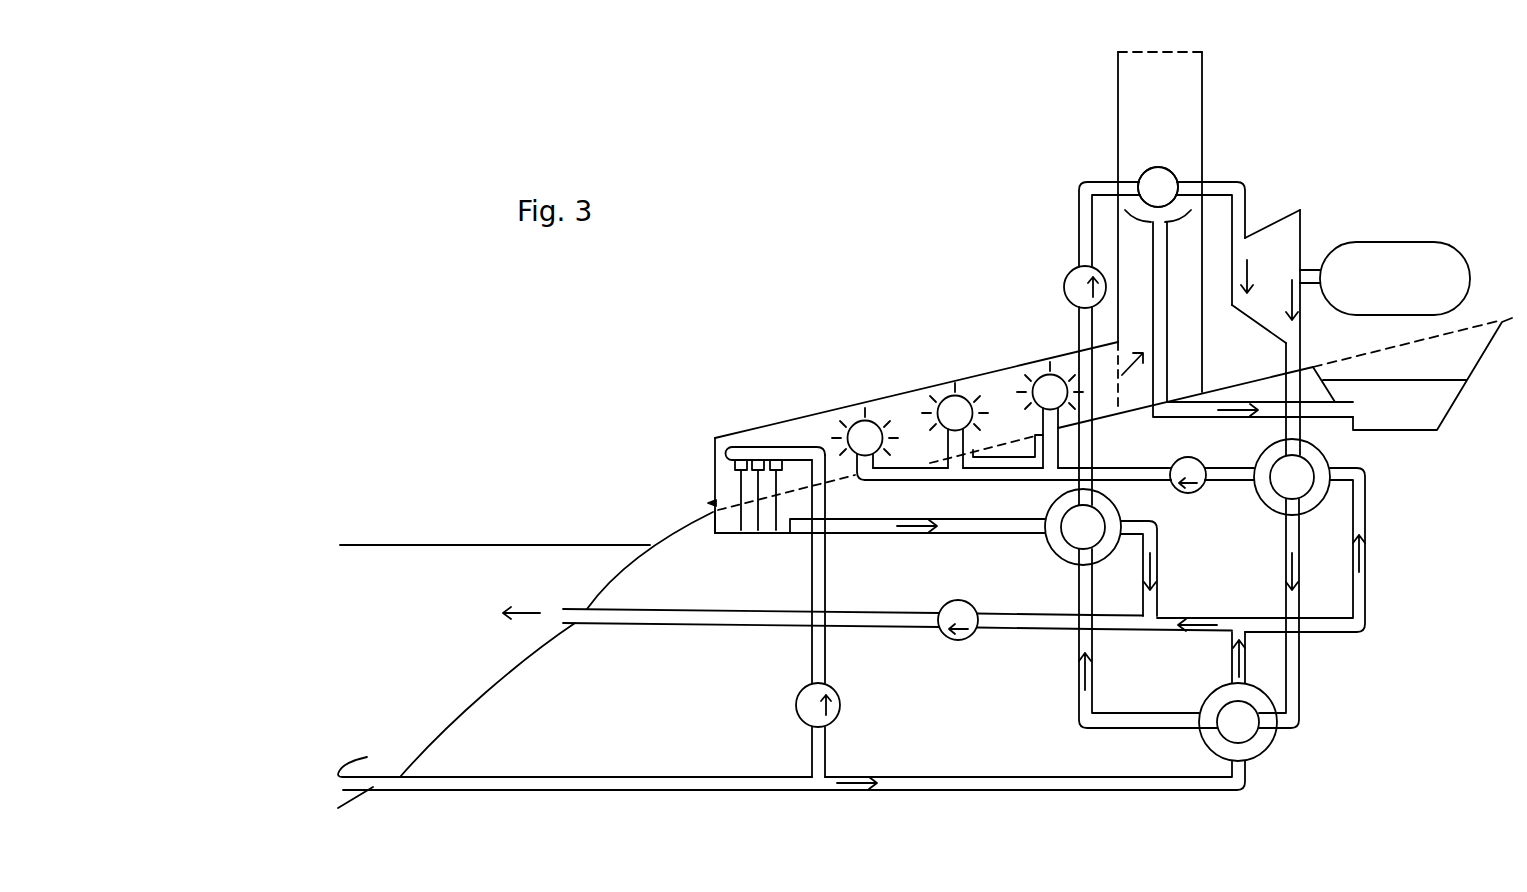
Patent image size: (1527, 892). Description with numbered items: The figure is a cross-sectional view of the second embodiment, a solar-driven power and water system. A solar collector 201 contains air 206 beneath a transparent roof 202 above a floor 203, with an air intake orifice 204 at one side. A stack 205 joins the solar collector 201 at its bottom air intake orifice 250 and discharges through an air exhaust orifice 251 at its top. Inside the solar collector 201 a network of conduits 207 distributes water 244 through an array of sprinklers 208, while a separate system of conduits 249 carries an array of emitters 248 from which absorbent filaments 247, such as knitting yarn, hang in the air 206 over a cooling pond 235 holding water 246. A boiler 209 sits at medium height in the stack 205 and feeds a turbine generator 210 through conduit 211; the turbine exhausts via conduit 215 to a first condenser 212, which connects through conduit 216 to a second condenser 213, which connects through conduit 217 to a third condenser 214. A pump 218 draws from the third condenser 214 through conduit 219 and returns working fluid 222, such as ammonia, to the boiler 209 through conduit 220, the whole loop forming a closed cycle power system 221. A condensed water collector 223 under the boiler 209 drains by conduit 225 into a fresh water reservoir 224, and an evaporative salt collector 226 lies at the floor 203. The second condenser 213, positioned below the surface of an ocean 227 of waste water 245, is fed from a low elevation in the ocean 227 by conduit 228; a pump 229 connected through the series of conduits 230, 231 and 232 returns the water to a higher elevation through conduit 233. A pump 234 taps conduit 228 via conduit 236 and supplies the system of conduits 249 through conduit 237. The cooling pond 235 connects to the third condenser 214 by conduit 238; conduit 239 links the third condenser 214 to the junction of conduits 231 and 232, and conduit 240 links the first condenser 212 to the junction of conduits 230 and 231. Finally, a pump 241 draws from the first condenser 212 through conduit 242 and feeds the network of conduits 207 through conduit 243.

The solar collector 201 is at (715, 438).
The transparent roof 202 is at (742, 432).
The floor 203 is at (1105, 415).
The air intake orifice 204 is at (715, 510).
The stack 205 is at (1203, 70).
The air 206 is at (728, 475).
The network of conduits 207 is at (975, 482).
The array of sprinklers 208 is at (945, 400).
The boiler 209 is at (1173, 168).
The turbine generator 210 is at (1301, 228).
The conduit 211 is at (1247, 180).
The first condenser 212 is at (1322, 468).
The second condenser 213 is at (1218, 708).
The third condenser 214 is at (1068, 540).
The conduit 215 is at (1302, 352).
The conduit 216 is at (1300, 676).
The conduit 217 is at (1077, 705).
The pump 218 is at (1063, 287).
The conduit 219 is at (1078, 330).
The conduit 220 is at (1082, 180).
The closed cycle power system 221 is at (1247, 213).
The working fluid 222 is at (1155, 177).
The condensed water collector 223 is at (1130, 220).
The fresh water reservoir 224 is at (1490, 343).
The conduit 225 is at (1262, 410).
The evaporative salt collector 226 is at (1008, 455).
The ocean 227 is at (436, 545).
The conduit 228 is at (1000, 777).
The pump 229 is at (957, 641).
The conduit 230 is at (1232, 657).
The conduit 231 is at (1207, 616).
The conduit 232 is at (1000, 612).
The conduit 233 is at (675, 624).
The pump 234 is at (796, 705).
The cooling pond 235 is at (763, 534).
The conduit 236 is at (826, 750).
The conduit 237 is at (826, 572).
The conduit 238 is at (883, 519).
The conduit 239 is at (1143, 593).
The conduit 240 is at (1366, 590).
The pump 241 is at (1203, 492).
The conduit 242 is at (1238, 468).
The conduit 243 is at (1112, 468).
The water 244 is at (1018, 470).
The waste water 245 is at (362, 770).
The water 246 is at (715, 535).
The absorbent filaments 247 is at (735, 492).
The array of emitters 248 is at (734, 465).
The system of conduits 249 is at (778, 447).
The air intake orifice 250 is at (1117, 393).
The air exhaust orifice 251 is at (1170, 53).